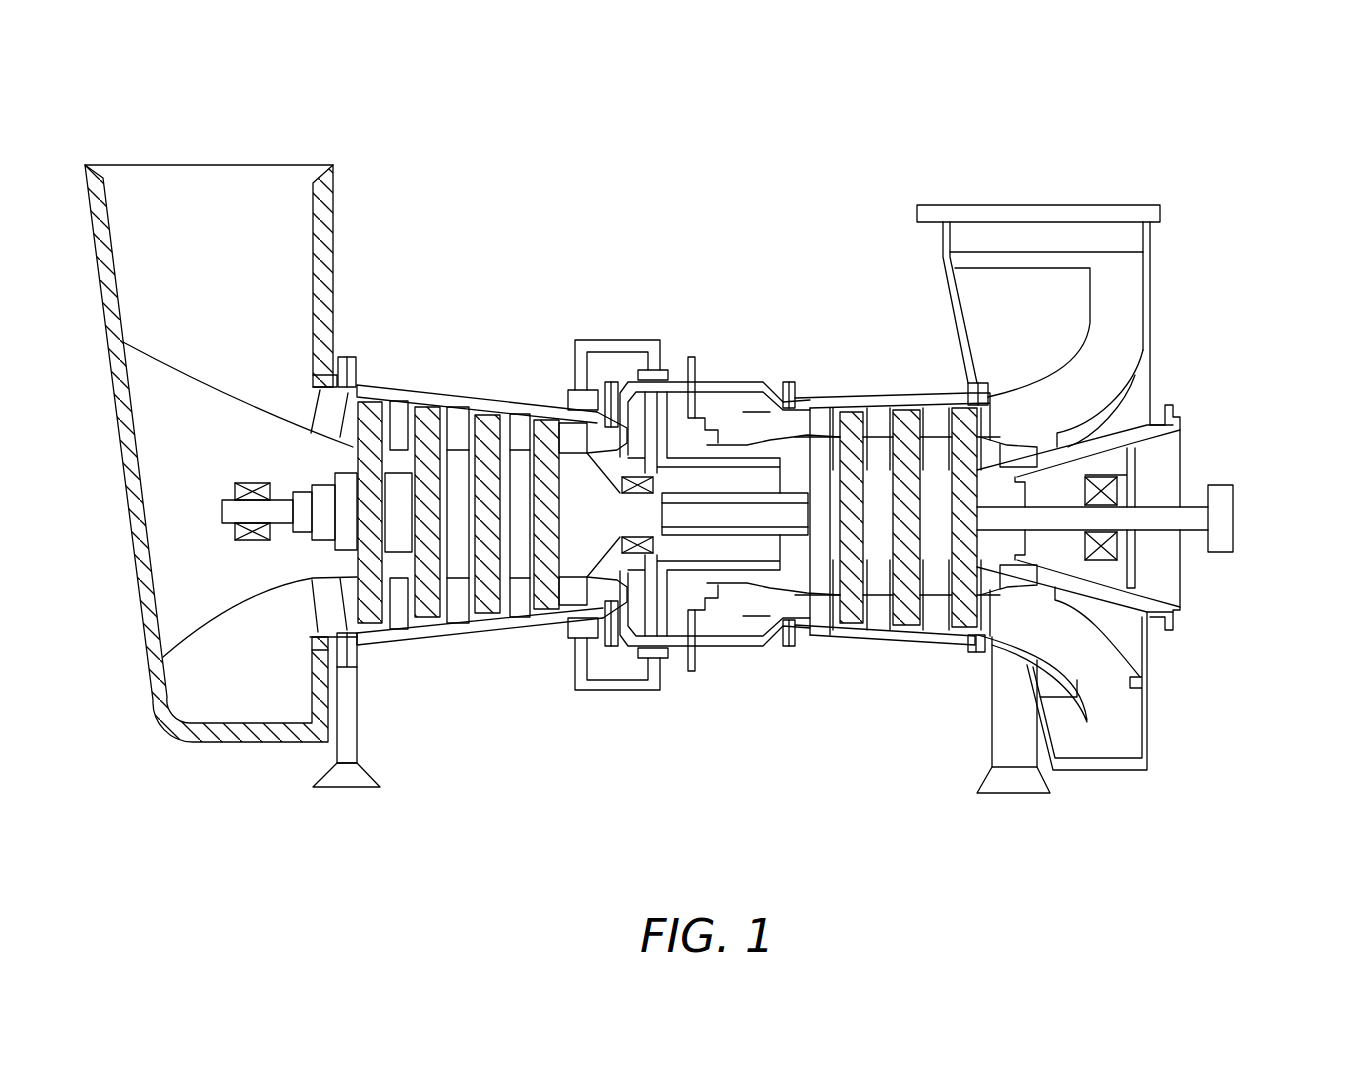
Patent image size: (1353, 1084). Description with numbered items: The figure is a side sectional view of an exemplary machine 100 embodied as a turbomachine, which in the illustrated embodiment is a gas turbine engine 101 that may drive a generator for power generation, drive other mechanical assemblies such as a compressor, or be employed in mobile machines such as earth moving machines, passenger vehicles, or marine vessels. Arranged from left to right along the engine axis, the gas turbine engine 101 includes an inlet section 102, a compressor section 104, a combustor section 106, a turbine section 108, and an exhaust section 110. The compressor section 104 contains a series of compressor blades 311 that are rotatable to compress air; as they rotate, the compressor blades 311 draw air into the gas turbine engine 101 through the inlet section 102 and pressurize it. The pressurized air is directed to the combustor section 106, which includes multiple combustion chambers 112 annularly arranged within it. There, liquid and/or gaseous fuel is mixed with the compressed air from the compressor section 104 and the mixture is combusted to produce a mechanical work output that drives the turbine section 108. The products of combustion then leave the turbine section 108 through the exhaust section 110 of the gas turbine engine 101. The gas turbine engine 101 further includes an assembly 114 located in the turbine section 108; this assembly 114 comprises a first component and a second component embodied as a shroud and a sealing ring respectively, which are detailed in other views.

The machine 100 is at (1246, 97).
The gas turbine engine 101 is at (1213, 195).
The inlet section 102 is at (353, 802).
The compressor section 104 is at (558, 722).
The combustor section 106 is at (783, 722).
The turbine section 108 is at (985, 722).
The exhaust section 110 is at (1170, 802).
The combustion chambers 112 is at (740, 433).
The assembly 114 is at (794, 434).
The compressor blades 311 is at (357, 443).